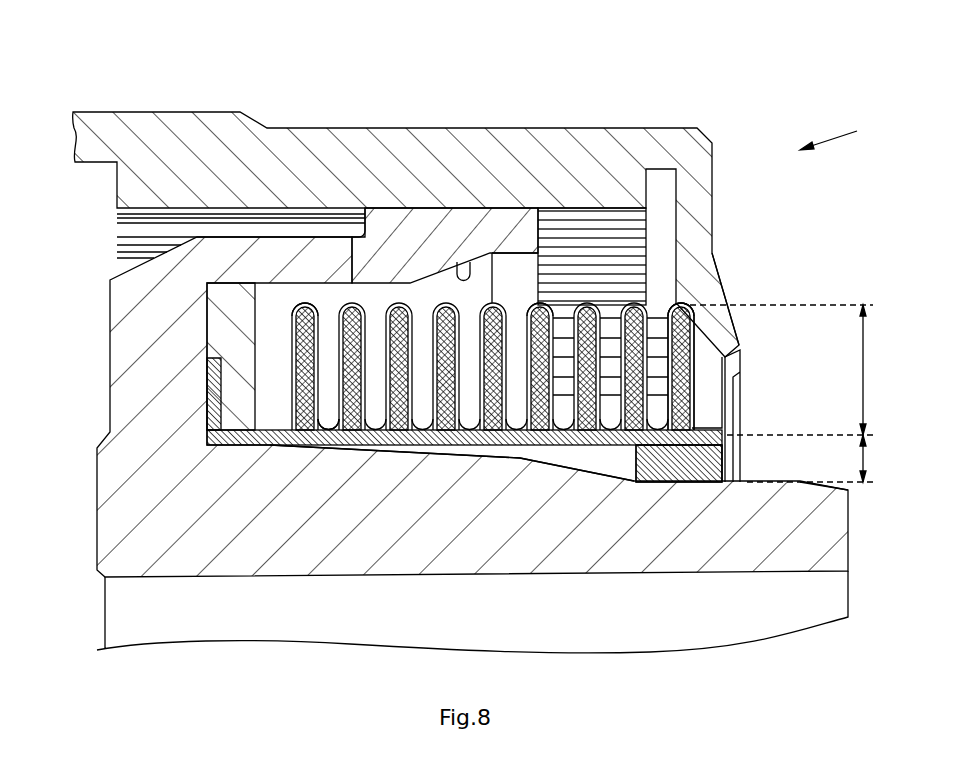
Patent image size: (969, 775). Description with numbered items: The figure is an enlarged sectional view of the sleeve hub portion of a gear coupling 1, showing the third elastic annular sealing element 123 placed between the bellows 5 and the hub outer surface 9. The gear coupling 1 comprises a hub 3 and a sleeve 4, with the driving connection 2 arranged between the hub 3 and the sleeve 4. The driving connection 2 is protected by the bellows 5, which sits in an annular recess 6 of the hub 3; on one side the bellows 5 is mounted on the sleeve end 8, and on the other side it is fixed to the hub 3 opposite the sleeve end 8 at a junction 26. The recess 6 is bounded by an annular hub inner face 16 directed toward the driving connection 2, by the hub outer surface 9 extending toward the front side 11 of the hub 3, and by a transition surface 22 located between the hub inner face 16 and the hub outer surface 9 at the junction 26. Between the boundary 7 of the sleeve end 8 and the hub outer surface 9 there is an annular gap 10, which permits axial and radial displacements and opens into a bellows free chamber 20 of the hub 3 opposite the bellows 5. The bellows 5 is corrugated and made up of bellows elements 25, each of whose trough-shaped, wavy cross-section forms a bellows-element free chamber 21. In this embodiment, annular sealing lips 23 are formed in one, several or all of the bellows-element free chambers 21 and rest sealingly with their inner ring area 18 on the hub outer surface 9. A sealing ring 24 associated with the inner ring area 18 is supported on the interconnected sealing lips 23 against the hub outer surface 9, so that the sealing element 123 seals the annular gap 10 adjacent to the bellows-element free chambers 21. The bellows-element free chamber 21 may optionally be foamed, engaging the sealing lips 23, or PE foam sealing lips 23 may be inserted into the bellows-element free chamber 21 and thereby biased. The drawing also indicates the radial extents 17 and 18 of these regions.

The gear coupling 1 is at (839, 131).
The driving connection 2 is at (382, 224).
The hub 3 is at (145, 395).
The sleeve 4 is at (697, 127).
The bellows 5 is at (403, 297).
The recess 6 is at (437, 285).
The boundary 7 is at (708, 415).
The sleeve end 8 is at (727, 333).
The hub outer surface 9 is at (822, 485).
The annular gap 10 is at (728, 462).
The front side 11 is at (850, 550).
The hub inner face 16 is at (470, 262).
The height 17 is at (865, 372).
The inner ring area 18 is at (865, 466).
The bellows free chamber 20 is at (527, 455).
The bellows-element free chamber 21 is at (645, 307).
The transition surface 22 is at (207, 370).
The annular sealing lips 23 is at (297, 318).
The sealing ring 24 is at (680, 482).
The bellows element 25 is at (330, 328).
The junction 26 is at (207, 390).
The third elastic annular sealing element 123 is at (667, 483).